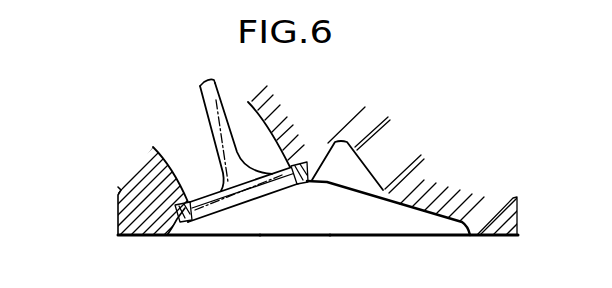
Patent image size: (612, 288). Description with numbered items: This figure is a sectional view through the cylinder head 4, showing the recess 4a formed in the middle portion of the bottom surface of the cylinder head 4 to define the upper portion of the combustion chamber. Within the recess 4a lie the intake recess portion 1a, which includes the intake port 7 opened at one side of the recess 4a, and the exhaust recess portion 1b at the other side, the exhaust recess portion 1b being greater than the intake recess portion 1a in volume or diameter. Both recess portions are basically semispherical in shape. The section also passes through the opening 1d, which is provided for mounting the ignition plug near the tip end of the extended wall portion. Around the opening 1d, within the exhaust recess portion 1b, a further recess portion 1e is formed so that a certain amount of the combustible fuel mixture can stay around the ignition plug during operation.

The intake port 7 is at (178, 163).
The further recess portion 1e is at (332, 156).
The opening 1d is at (398, 167).
The intake recess portion 1a is at (219, 228).
The recess 4a is at (292, 225).
The exhaust recess portion 1b is at (375, 223).
The cylinder head 4 is at (498, 228).